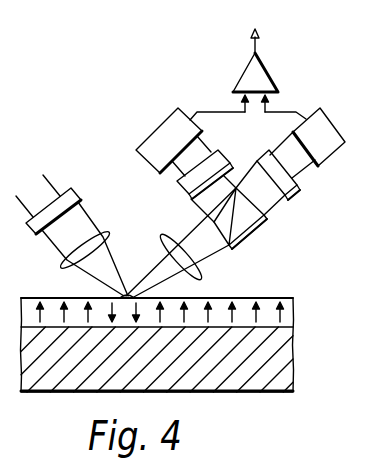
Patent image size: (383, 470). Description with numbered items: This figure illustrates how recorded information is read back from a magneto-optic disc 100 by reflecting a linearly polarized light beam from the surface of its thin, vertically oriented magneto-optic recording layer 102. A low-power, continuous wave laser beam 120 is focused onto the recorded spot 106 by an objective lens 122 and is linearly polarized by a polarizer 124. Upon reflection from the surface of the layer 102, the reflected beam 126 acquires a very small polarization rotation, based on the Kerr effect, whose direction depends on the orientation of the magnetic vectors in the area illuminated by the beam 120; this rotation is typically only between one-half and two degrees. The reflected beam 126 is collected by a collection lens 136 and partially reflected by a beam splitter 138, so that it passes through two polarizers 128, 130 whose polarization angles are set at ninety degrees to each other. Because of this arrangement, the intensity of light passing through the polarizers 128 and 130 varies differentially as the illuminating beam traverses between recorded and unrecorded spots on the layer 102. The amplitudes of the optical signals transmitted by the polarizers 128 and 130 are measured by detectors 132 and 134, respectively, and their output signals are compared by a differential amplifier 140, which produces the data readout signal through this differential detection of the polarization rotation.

The disc 100 is at (282, 358).
The magneto-optic recording layer 102 is at (286, 314).
The recorded spot 106 is at (116, 294).
The laser beam 120 is at (50, 184).
The polarizer 124 is at (68, 199).
The objective lens 122 is at (107, 231).
The reflected beam 126 is at (153, 268).
The collection lens 136 is at (199, 279).
The beam splitter 138 is at (238, 233).
The polarizer 128 is at (215, 160).
The polarizer 130 is at (288, 197).
The detector 132 is at (178, 112).
The detector 134 is at (331, 159).
The differential amplifier 140 is at (262, 75).